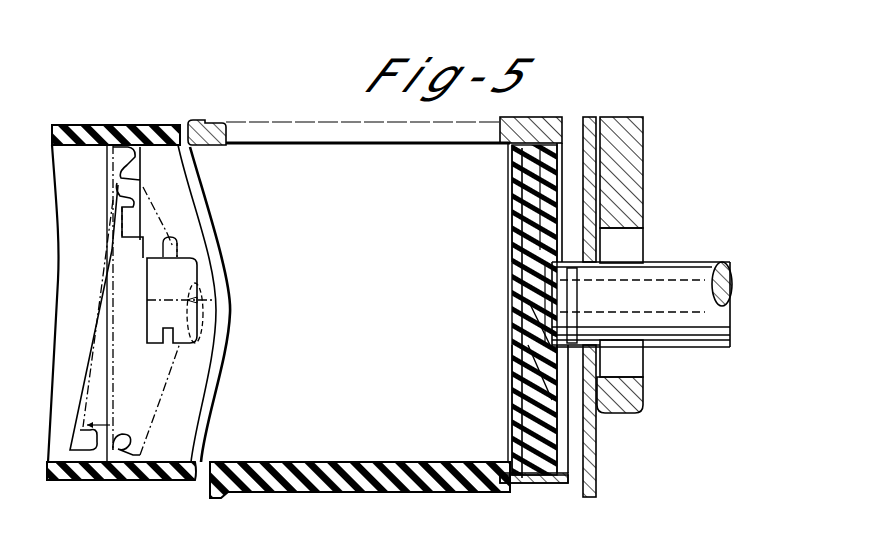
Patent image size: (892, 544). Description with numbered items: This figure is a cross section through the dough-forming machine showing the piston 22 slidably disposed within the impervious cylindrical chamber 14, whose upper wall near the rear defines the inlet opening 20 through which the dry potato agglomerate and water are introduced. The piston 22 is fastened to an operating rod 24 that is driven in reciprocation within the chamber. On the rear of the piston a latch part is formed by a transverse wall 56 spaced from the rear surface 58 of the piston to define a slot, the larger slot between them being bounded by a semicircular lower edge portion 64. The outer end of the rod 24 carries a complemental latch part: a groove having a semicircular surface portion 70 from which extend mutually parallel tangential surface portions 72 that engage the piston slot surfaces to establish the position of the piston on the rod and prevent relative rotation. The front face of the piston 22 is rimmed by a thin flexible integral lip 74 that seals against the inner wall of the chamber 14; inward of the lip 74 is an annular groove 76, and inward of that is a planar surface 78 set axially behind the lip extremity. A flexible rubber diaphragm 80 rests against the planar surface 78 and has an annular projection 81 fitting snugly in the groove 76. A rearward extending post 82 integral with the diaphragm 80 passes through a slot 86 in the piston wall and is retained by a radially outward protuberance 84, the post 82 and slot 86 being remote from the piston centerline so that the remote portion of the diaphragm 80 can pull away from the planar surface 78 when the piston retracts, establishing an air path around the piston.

The cylindrical chamber 14 is at (70, 126).
The inlet opening 20 is at (226, 123).
The piston 22 is at (548, 424).
The operating rod 24 is at (215, 312).
The transverse wall 56 is at (580, 247).
The rear surface 58 is at (516, 250).
The semicircular lower edge portion 64 is at (512, 340).
The semicircular surface portion 70 is at (590, 331).
The tangential surface portions 72 is at (578, 296).
The lip 74 is at (496, 484).
The annular groove 76 is at (121, 440).
The planar surface 78 is at (112, 385).
The flexible diaphragm 80 is at (93, 330).
The annular projection 81 is at (76, 482).
The post 82 is at (140, 187).
The protuberance 84 is at (509, 175).
The slot 86 is at (512, 186).